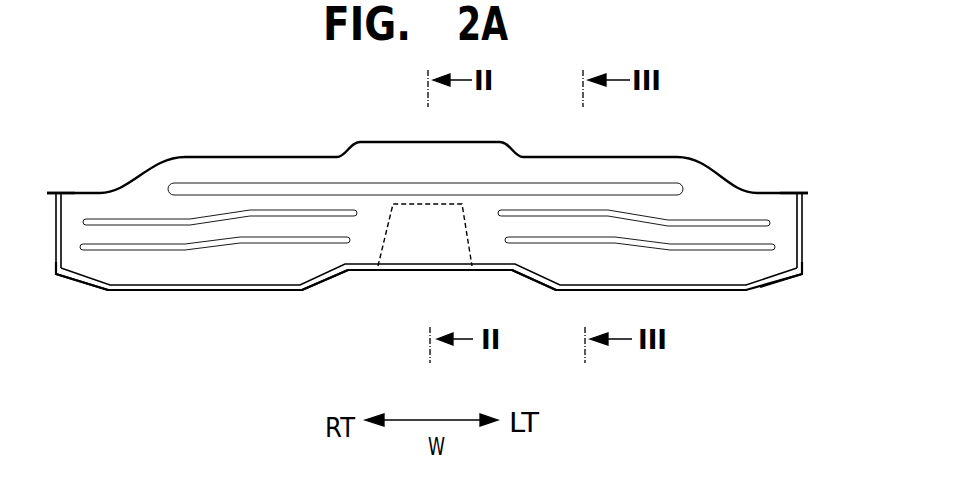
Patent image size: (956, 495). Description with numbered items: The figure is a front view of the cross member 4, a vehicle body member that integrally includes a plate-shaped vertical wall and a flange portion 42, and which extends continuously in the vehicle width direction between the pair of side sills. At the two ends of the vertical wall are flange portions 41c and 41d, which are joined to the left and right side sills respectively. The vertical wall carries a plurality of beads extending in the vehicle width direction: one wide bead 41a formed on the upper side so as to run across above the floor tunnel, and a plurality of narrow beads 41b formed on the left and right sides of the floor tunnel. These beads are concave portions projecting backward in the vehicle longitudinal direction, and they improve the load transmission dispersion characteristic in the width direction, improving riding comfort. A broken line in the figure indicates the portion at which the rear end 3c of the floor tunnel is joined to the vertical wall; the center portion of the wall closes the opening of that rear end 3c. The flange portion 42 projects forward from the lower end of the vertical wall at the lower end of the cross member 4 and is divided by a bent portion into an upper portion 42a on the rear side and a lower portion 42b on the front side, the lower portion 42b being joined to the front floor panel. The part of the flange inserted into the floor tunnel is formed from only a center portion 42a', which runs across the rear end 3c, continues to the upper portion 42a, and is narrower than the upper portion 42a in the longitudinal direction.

The rear end 3c is at (442, 198).
The cross member 4 is at (228, 139).
The bead 41a is at (263, 184).
The bead 41b is at (150, 221).
The flange portion 41c is at (58, 272).
The flange portion 41d is at (50, 191).
The flange portion 42 is at (236, 291).
The upper portion 42a is at (427, 335).
The center portion 42a' is at (430, 300).
The lower portion 42b is at (286, 291).